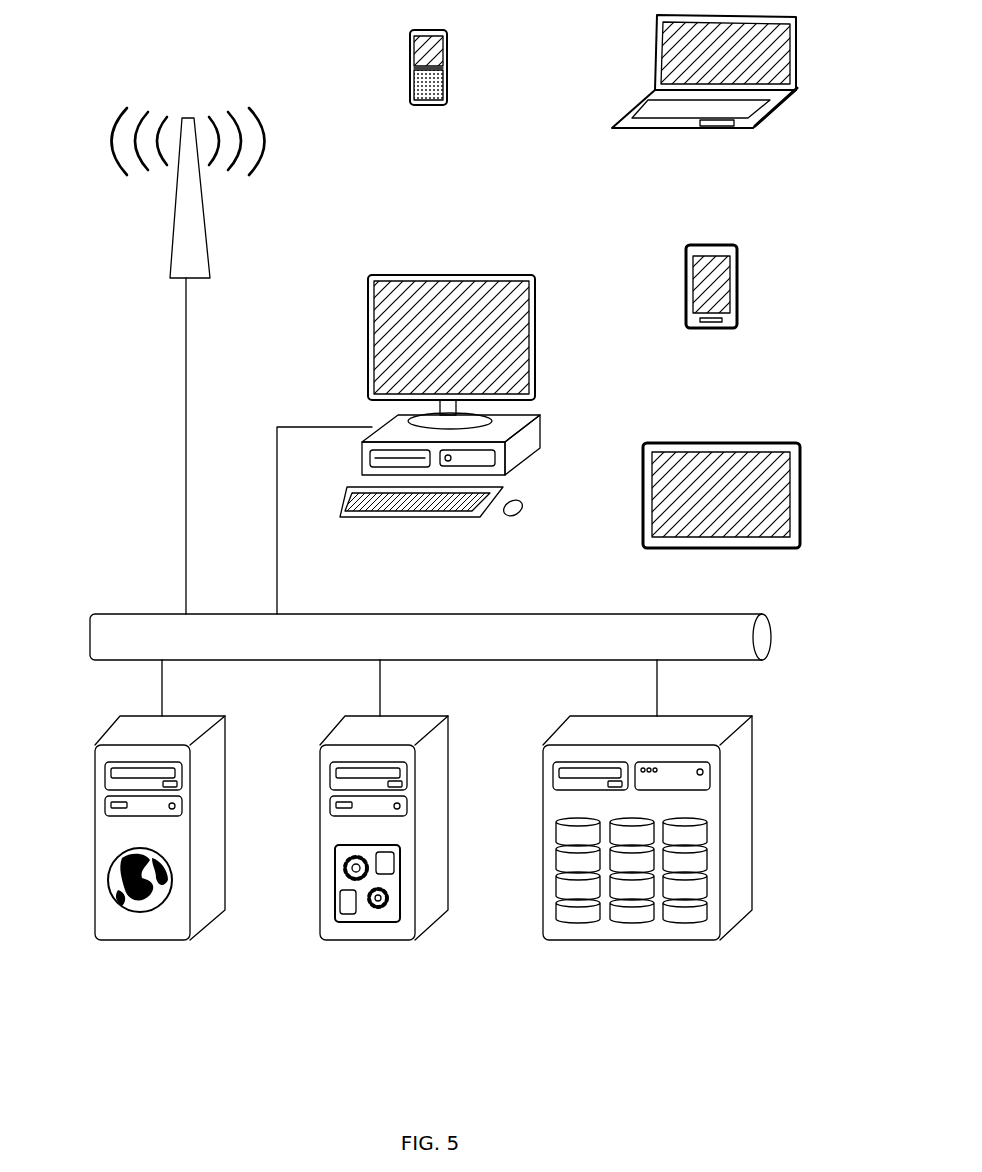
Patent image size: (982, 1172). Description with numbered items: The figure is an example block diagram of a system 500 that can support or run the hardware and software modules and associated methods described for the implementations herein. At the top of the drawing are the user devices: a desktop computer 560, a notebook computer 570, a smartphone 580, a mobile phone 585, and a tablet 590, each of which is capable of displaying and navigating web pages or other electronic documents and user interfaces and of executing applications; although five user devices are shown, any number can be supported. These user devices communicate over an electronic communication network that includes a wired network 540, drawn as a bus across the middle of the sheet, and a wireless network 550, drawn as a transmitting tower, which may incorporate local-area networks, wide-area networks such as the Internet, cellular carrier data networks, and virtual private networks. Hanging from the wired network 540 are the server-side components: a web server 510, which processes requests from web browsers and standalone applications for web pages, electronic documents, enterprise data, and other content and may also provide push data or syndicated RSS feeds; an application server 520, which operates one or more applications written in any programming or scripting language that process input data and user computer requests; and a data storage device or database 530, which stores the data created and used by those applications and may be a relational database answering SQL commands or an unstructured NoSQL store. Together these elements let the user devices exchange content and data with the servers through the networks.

The system 500 is at (453, 548).
The web server 510 is at (154, 942).
The application server 520 is at (380, 942).
The data storage device or database 530 is at (657, 942).
The wired network 540 is at (430, 665).
The wireless network 550 is at (181, 104).
The desktop computer 560 is at (446, 525).
The notebook computer 570 is at (713, 138).
The smartphone 580 is at (713, 330).
The mobile phone 585 is at (431, 108).
The tablet 590 is at (645, 540).